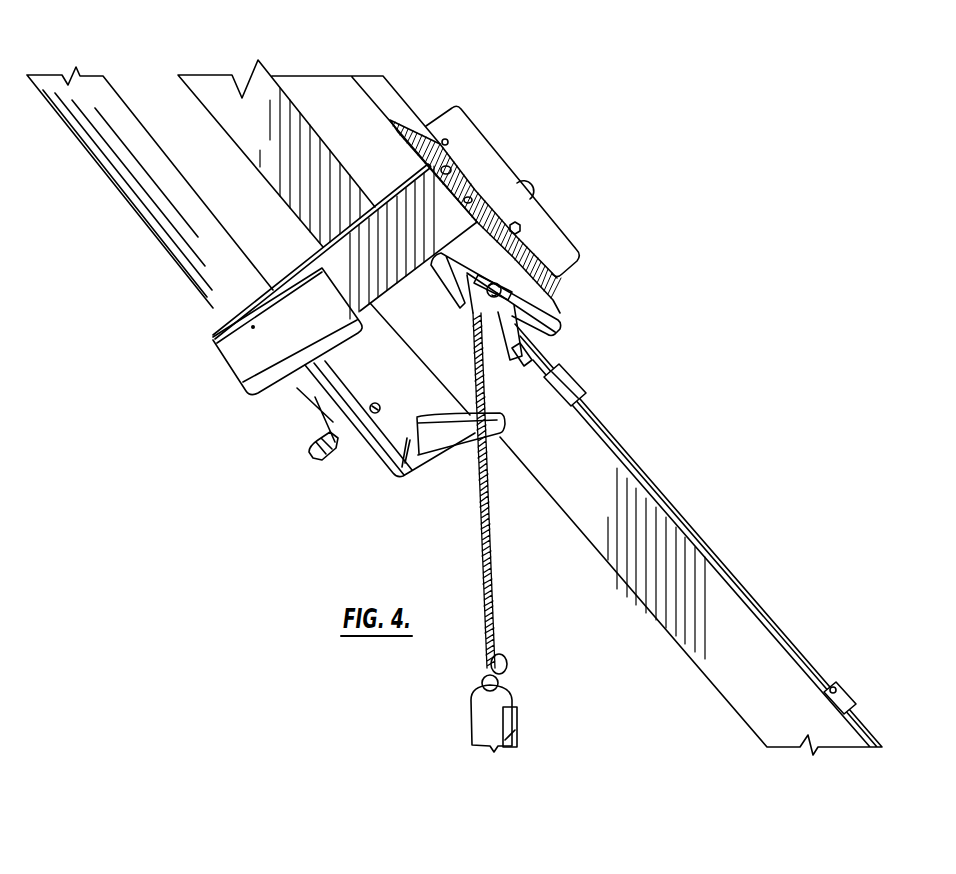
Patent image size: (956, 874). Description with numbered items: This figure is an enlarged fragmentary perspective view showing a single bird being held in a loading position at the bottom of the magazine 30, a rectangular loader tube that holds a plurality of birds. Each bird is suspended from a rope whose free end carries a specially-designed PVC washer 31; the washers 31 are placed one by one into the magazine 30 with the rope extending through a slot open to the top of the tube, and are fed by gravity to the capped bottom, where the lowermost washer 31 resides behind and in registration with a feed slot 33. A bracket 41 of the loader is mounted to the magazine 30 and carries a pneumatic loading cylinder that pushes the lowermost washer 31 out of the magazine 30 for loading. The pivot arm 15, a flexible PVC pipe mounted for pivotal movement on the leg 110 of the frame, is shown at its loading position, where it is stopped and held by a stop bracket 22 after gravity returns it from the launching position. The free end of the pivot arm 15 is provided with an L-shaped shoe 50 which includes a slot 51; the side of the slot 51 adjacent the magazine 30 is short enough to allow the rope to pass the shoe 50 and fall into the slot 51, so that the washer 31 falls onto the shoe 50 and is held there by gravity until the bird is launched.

The pivot arm 15 is at (175, 251).
The magazine 30 is at (338, 88).
The guide rail 110 is at (750, 633).
The stop bracket 22 is at (238, 354).
The bracket 41 is at (483, 157).
The PVC washer 31 is at (513, 298).
The feed slot 33 is at (540, 358).
The L-shaped shoe 50 is at (347, 395).
The slot 51 is at (463, 428).